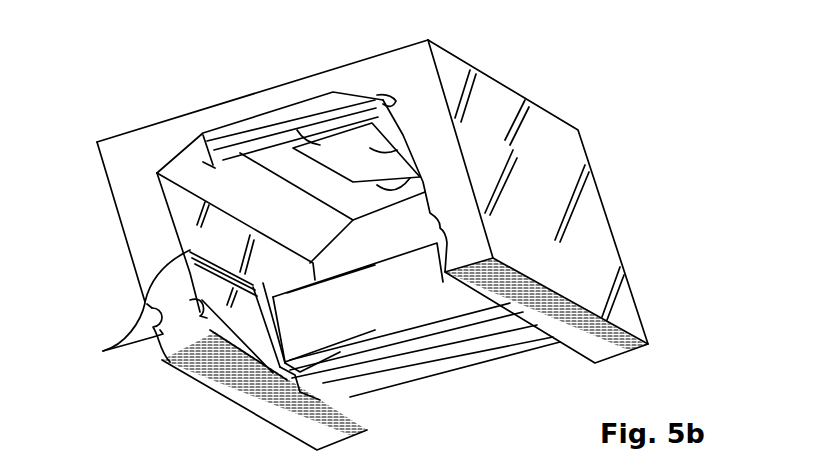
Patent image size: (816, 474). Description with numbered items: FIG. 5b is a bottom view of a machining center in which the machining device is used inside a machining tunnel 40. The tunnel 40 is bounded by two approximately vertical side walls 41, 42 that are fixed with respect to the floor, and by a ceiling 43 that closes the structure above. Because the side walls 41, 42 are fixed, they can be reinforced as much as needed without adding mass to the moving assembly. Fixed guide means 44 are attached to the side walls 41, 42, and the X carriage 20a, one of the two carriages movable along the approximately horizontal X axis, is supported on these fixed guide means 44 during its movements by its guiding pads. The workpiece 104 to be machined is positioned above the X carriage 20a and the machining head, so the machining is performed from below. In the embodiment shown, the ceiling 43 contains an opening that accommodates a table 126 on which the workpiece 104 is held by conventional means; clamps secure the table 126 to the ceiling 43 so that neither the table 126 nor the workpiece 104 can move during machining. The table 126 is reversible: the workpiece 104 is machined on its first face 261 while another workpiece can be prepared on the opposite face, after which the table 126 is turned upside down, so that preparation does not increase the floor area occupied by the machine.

The first X carriage 20a is at (432, 295).
The machining tunnel 40 is at (592, 260).
The side wall 41 is at (147, 218).
The side wall 42 is at (446, 175).
The ceiling 43 is at (313, 85).
The fixed guide means 44 is at (103, 350).
The workpiece 104 is at (374, 152).
The table 126 is at (382, 100).
The first face 261 is at (298, 163).